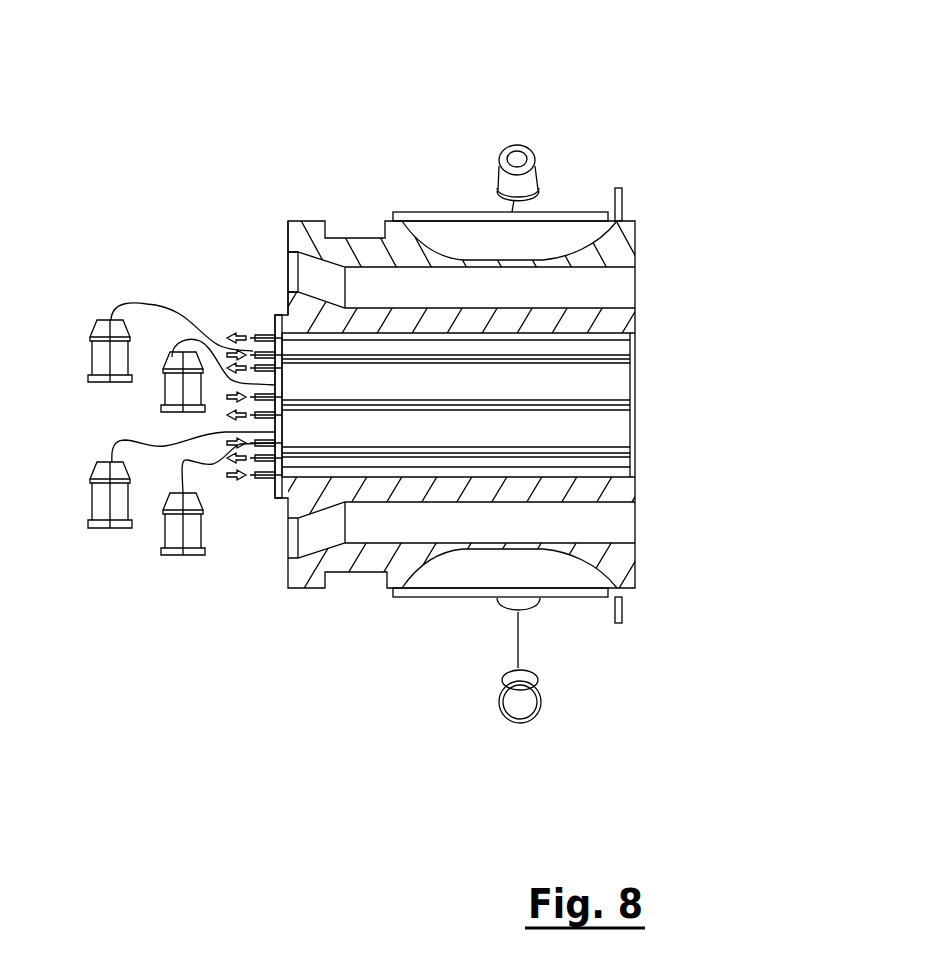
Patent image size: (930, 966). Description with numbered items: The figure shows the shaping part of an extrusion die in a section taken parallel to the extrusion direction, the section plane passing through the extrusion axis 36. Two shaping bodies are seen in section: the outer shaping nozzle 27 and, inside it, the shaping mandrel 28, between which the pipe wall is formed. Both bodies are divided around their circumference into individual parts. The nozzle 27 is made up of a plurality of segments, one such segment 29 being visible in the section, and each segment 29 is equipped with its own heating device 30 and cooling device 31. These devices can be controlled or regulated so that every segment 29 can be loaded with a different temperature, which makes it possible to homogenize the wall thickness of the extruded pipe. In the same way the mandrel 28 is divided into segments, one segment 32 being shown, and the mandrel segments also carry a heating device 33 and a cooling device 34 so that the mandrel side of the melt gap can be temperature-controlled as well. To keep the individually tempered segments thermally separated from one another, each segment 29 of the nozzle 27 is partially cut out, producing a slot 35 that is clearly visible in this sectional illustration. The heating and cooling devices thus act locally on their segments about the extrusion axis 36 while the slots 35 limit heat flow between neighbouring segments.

The nozzle 27 is at (322, 238).
The mandrel 28 is at (283, 318).
The segment of the nozzle 29 is at (322, 238).
The heating device 30 is at (527, 172).
The cooling device 31 is at (622, 200).
The segment of the mandrel 32 is at (280, 322).
The heating device 33 is at (174, 352).
The cooling device 34 is at (275, 444).
The slot 35 is at (463, 577).
The extrusion axis 36 is at (400, 405).